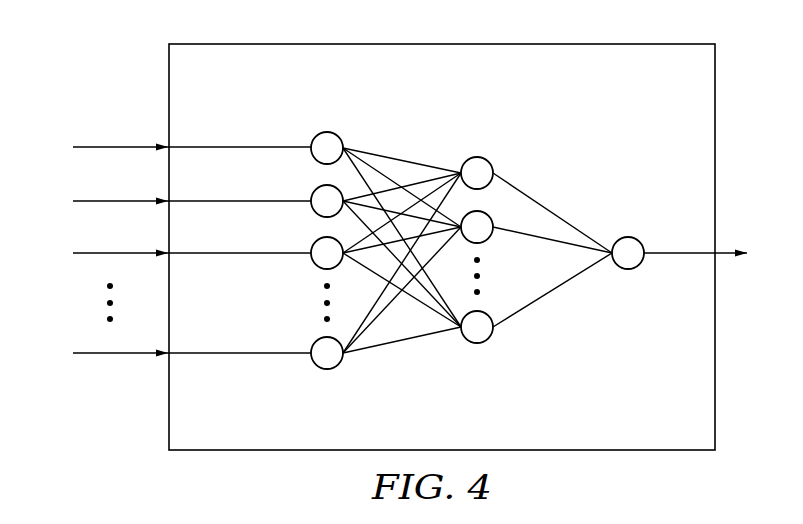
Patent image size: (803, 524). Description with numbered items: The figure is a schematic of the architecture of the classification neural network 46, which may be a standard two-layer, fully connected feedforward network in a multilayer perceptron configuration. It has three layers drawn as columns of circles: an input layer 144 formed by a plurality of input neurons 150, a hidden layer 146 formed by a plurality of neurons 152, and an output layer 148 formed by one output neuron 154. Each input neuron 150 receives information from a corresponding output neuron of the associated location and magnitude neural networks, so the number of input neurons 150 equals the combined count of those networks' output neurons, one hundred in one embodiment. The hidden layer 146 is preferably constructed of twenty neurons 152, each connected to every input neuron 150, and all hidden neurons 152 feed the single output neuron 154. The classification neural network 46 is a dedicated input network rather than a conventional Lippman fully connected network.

The classification neural network 46 is at (632, 44).
The input layer 144 is at (312, 270).
The hidden layer 146 is at (487, 261).
The output layer 148 is at (625, 265).
The input neuron 150 is at (316, 137).
The hidden layer neuron 152 is at (485, 158).
The output neuron 154 is at (628, 237).